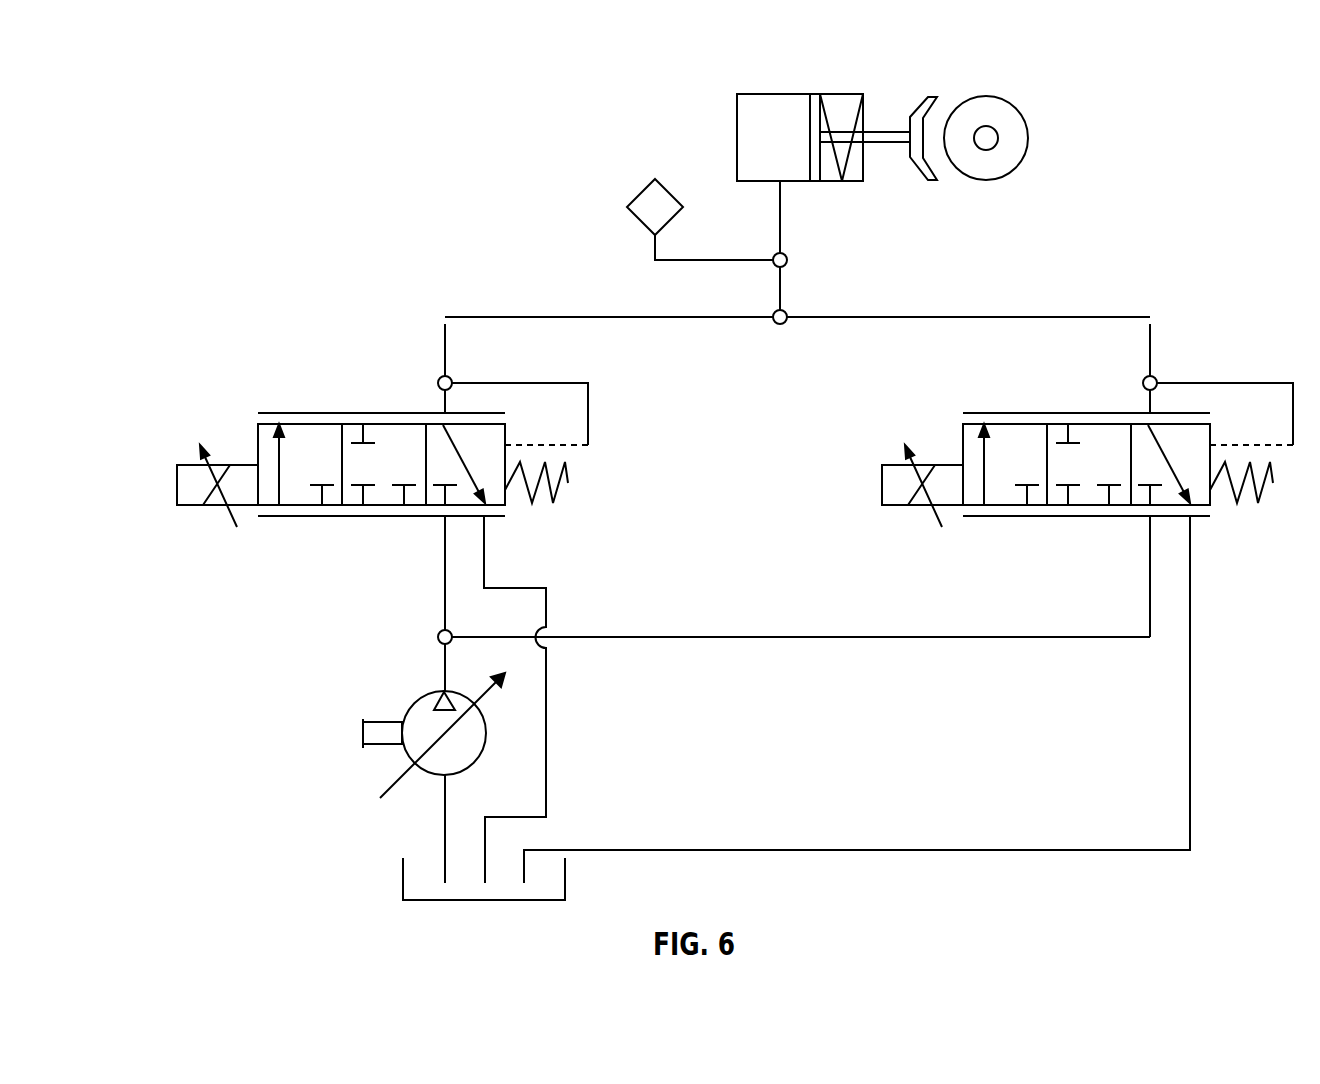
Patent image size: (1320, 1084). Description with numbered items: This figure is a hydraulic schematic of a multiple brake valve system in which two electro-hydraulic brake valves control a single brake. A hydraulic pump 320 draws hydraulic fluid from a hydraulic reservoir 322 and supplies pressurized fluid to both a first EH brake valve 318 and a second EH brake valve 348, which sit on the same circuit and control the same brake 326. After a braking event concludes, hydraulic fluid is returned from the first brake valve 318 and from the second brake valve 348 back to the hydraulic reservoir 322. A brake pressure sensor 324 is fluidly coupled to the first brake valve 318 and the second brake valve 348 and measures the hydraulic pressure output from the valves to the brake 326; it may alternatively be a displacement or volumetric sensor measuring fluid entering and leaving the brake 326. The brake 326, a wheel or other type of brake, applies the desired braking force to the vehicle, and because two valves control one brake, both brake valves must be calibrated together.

The first EH brake valve 318 is at (272, 412).
The second EH brake valve 348 is at (1023, 412).
The hydraulic pump 320 is at (362, 733).
The hydraulic reservoir 322 is at (402, 885).
The brake pressure sensor 324 is at (646, 186).
The brake 326 is at (1000, 93).